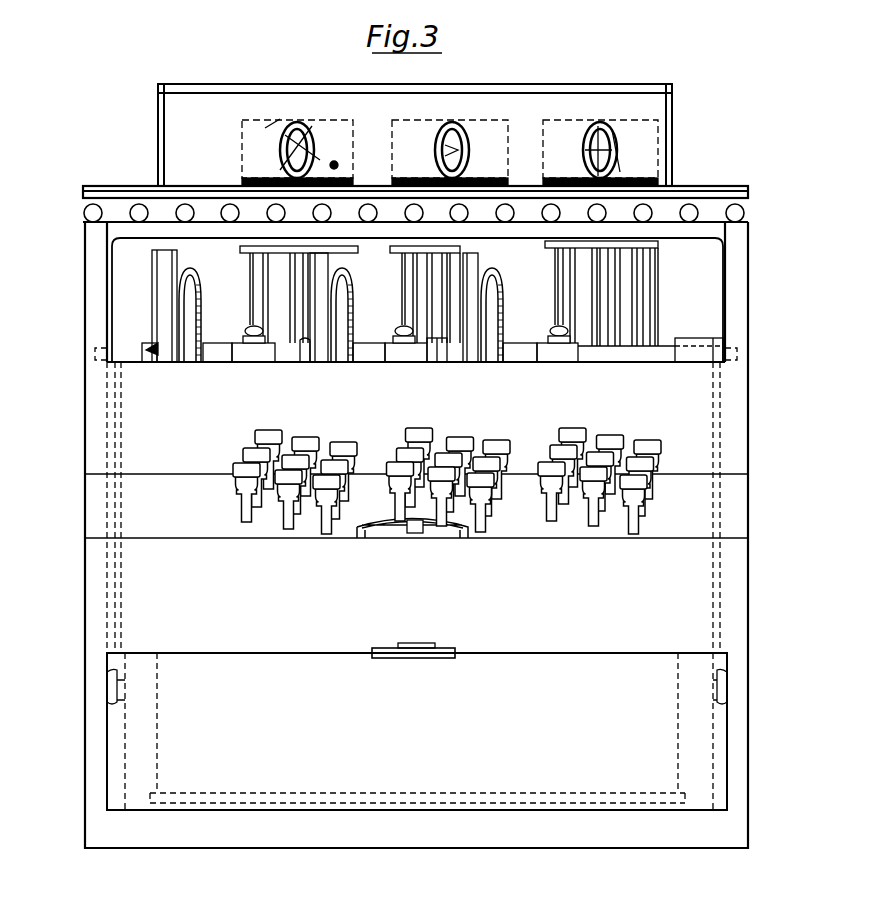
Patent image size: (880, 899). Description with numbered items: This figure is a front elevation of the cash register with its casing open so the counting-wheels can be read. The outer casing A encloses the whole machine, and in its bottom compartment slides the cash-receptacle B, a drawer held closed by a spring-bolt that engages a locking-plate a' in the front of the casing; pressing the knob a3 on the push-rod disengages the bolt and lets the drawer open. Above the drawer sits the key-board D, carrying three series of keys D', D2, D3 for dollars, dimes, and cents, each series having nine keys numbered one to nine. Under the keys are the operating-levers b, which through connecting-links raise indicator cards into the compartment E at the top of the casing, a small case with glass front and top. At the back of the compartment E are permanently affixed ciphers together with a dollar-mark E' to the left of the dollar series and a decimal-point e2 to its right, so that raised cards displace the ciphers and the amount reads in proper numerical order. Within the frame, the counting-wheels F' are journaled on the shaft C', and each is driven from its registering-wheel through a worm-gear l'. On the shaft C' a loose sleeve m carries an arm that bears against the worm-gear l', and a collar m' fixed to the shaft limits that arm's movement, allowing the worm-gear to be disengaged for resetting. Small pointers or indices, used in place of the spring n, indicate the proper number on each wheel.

The outer casing A is at (407, 514).
The cash-receptacle B is at (417, 731).
The shaft C' is at (574, 358).
The key-board D is at (416, 506).
The series of keys D' is at (599, 470).
The series of keys D2 is at (449, 469).
The series of keys D3 is at (295, 471).
The compartment E is at (415, 140).
The dollar-mark E' is at (226, 117).
The decimal-point e2 is at (330, 157).
The locking-plate a' is at (413, 638).
The knob or handle a3 is at (446, 531).
The operating-levers b is at (285, 285).
The worm-gear l' is at (346, 315).
The loose sleeve m is at (339, 352).
The collar m' is at (405, 352).
The spring n is at (146, 348).
The counting-wheels F' is at (301, 310).